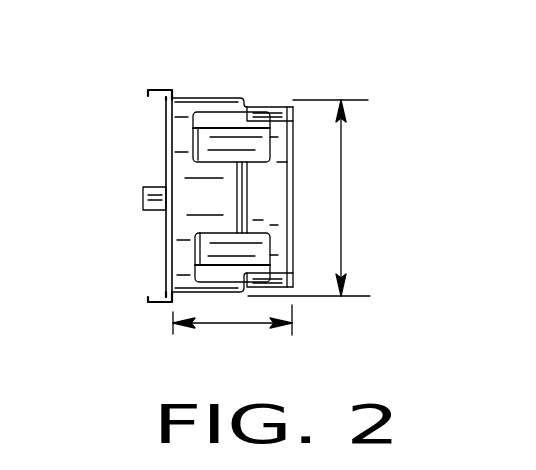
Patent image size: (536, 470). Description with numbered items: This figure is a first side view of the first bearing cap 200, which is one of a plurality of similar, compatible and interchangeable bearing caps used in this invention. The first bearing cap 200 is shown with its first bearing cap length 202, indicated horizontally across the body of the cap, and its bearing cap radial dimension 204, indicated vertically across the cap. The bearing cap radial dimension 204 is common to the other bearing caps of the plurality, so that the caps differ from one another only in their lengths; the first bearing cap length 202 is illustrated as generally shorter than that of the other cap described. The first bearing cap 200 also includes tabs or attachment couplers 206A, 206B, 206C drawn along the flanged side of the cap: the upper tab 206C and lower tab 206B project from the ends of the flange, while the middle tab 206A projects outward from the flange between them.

The relay / connector assembly 200 is at (278, 46).
The width dimension 202 is at (235, 325).
The height dimension 204 is at (343, 217).
The mounting tab 206A is at (143, 200).
The lower flange foot 206B is at (156, 298).
The upper flange hook 206C is at (152, 96).